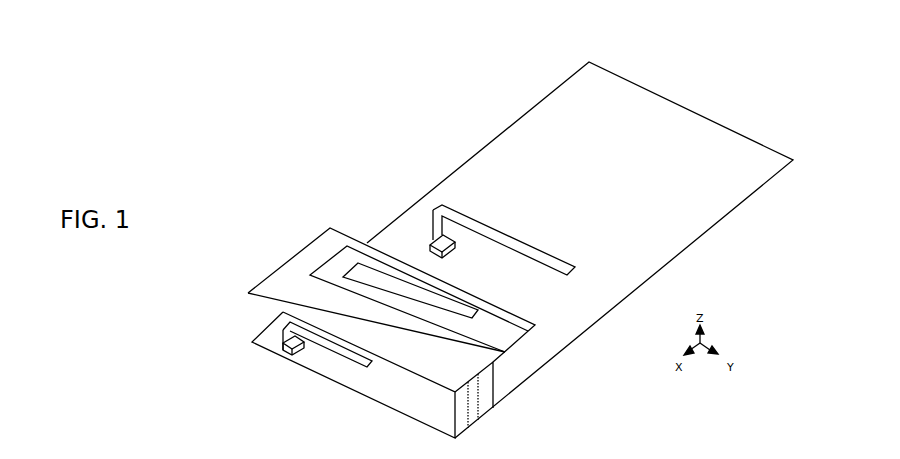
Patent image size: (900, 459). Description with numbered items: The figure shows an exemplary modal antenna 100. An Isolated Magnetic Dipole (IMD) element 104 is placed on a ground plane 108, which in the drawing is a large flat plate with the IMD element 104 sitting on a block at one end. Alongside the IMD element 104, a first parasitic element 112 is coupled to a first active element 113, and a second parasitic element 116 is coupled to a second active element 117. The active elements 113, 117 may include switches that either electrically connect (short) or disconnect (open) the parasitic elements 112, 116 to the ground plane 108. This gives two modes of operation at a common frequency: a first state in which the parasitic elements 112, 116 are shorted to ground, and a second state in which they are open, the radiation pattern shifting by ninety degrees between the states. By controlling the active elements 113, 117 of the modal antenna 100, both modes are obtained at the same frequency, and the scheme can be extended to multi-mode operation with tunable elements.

The modal antenna 100 is at (703, 107).
The ground plane 108 is at (673, 213).
The Isolated Magnetic Dipole (IMD) element 104 is at (288, 293).
The first parasitic element 112 is at (475, 212).
The first active element 113 is at (427, 233).
The second parasitic element 116 is at (340, 348).
The second active element 117 is at (280, 353).